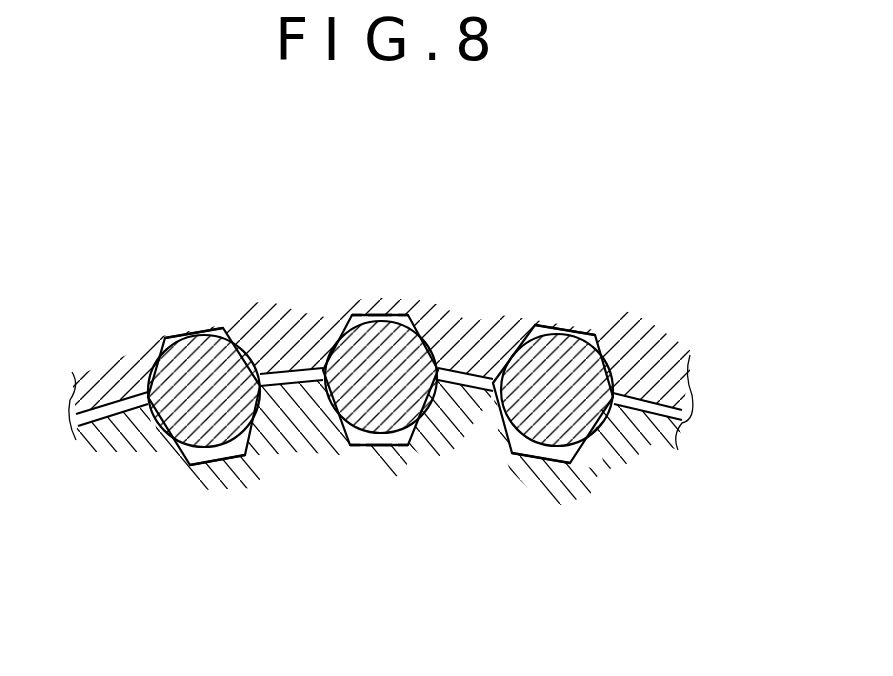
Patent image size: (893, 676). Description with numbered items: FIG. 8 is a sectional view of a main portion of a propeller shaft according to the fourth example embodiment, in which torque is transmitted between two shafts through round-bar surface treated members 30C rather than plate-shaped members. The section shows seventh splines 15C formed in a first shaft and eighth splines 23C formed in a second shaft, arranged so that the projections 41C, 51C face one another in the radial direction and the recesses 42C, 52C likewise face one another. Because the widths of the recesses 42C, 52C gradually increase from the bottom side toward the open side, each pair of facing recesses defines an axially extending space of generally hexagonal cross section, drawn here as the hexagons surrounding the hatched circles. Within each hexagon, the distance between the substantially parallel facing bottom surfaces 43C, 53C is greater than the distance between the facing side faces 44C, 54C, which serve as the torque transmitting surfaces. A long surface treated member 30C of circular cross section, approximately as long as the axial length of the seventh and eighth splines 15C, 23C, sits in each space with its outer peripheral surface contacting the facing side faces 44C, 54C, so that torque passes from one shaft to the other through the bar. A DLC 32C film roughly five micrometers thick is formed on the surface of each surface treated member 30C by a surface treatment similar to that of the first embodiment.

The seventh splines 15C is at (150, 490).
The eighth splines 23C is at (118, 368).
The surface treated member 30C is at (150, 352).
The DLC 32C is at (313, 357).
The projections 41C is at (245, 326).
The recesses 42C is at (492, 568).
The bottom surface 43C is at (378, 446).
The side faces 44C is at (343, 446).
The projections 51C is at (312, 382).
The recesses 52C is at (168, 340).
The bottom surface 53C is at (382, 314).
The side faces 54C is at (345, 322).